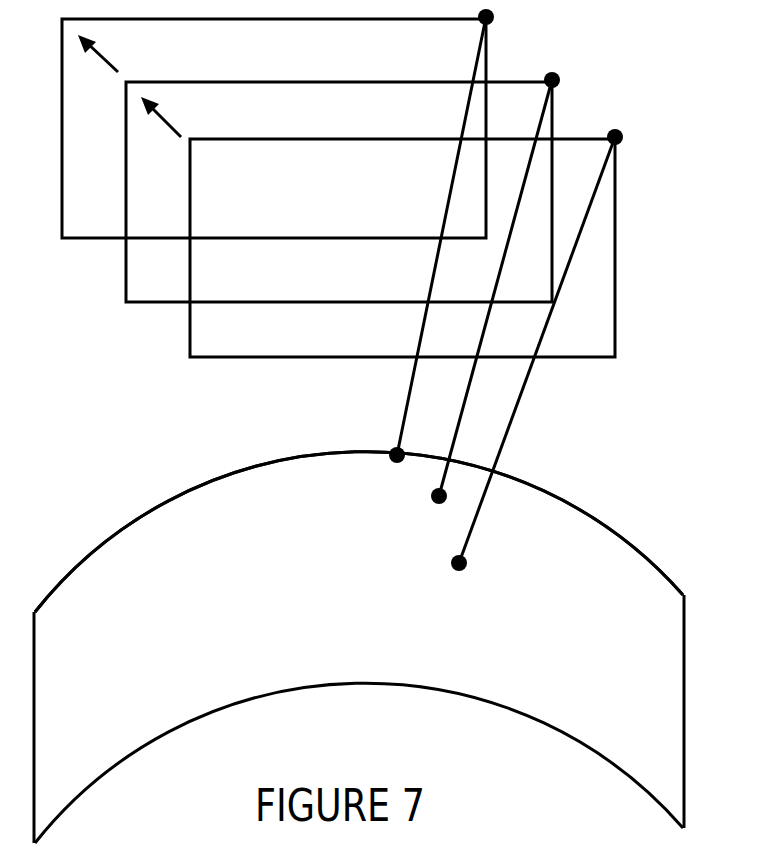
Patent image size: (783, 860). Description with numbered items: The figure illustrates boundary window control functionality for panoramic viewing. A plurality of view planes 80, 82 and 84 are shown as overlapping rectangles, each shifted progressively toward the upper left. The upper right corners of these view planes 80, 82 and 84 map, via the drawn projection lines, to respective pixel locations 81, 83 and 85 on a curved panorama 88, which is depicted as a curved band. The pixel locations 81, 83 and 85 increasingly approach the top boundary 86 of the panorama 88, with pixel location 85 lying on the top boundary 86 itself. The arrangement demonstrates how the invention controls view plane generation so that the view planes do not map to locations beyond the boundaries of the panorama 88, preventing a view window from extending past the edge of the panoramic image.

The view plane 80 is at (208, 322).
The view plane 82 is at (142, 260).
The view plane 84 is at (82, 107).
The pixel location 81 is at (449, 570).
The pixel location 83 is at (430, 503).
The pixel location 85 is at (385, 461).
The top boundary 86 is at (280, 463).
The panorama 88 is at (668, 753).